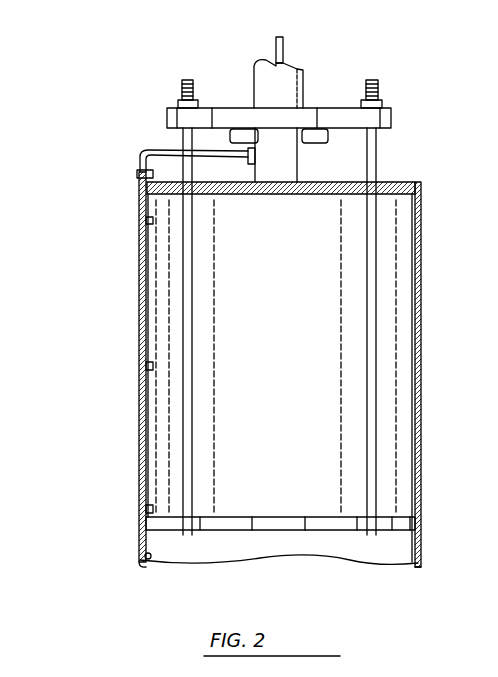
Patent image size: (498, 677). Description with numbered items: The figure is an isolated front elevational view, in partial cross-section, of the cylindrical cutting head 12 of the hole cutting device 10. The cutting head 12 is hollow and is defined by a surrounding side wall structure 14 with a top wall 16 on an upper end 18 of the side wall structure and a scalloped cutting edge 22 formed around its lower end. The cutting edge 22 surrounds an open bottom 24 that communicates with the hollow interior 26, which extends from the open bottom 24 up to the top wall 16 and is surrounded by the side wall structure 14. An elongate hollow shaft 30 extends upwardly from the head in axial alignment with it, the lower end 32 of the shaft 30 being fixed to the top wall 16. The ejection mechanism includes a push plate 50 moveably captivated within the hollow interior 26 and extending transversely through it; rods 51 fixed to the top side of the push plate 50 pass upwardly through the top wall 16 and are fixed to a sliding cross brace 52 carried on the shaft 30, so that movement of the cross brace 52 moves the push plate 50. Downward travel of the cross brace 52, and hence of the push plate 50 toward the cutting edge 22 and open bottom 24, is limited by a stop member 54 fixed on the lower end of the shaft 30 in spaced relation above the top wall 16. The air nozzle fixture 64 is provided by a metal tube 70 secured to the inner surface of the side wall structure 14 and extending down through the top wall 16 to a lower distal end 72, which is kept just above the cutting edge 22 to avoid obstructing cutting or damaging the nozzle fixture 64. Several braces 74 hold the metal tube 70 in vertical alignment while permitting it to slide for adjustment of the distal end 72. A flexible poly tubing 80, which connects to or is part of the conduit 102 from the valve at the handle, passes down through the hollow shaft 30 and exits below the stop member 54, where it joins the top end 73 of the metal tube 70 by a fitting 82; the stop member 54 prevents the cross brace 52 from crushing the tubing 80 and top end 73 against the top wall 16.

The hole cutting device 10 is at (449, 106).
The cutting head 12 is at (424, 217).
The side wall structure 14 is at (420, 308).
The top wall 16 is at (393, 182).
The upper end 18 is at (138, 180).
The cutting edge 22 is at (418, 567).
The open bottom 24 is at (307, 556).
The hollow interior 26 is at (276, 356).
The elongate shaft 30 is at (312, 82).
The lower end of the shaft 32 is at (303, 160).
The push plate 50 is at (272, 517).
The rods 51 is at (183, 139).
The sliding cross brace 52 is at (222, 115).
The stop member 54 is at (240, 140).
The nozzle fixture 64 is at (150, 545).
The metal tube 70 is at (141, 448).
The lower distal end 72 is at (144, 565).
The top end 73 is at (142, 196).
The braces 74 is at (144, 221).
The flexible poly tubing 80 is at (157, 150).
The fitting 82 is at (140, 168).
The conduit 102 is at (282, 44).